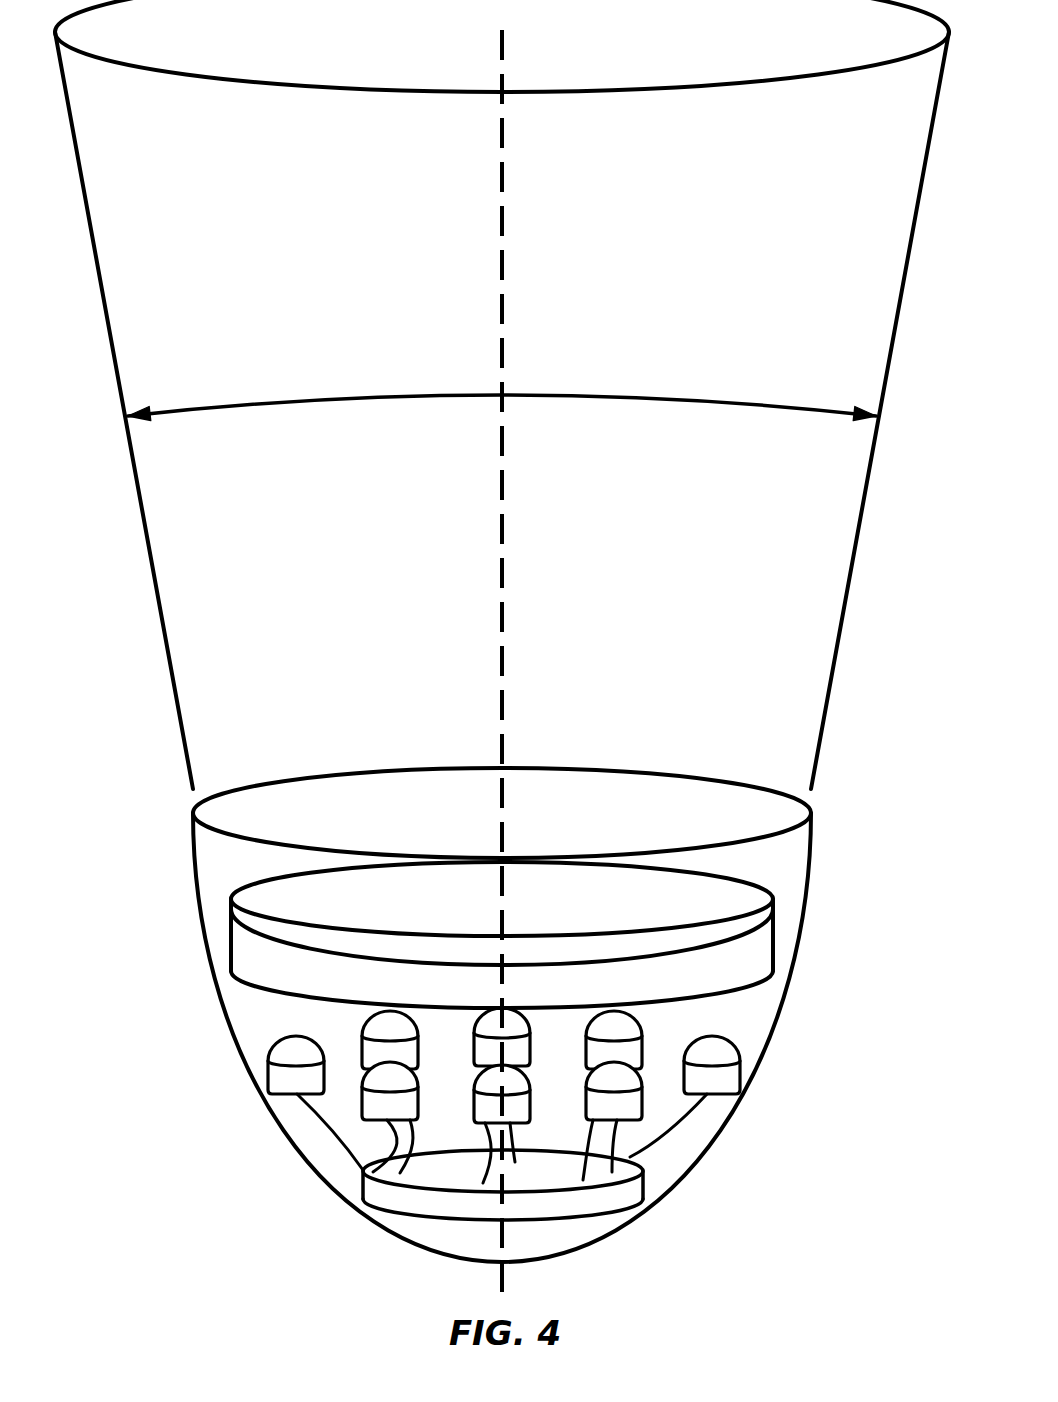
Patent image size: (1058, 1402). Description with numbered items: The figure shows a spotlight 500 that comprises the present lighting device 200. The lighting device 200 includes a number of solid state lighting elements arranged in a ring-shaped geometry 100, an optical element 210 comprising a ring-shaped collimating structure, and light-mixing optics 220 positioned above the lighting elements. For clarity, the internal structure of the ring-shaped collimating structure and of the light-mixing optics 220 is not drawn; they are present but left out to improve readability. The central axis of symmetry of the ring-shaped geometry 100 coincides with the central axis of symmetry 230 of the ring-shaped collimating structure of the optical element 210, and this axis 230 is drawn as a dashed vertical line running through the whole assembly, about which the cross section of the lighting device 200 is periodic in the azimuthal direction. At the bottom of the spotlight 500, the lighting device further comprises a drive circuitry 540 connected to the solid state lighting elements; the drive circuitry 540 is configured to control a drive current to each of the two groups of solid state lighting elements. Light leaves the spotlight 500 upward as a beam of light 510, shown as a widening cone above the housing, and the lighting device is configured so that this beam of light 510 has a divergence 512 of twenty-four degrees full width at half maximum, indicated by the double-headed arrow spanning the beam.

The ring-shaped geometry 100 is at (358, 1130).
The lighting device 200 is at (418, 1155).
The optical element 210 is at (278, 970).
The light-mixing optics 220 is at (742, 923).
The central axis of symmetry 230 is at (507, 652).
The spotlight 500 is at (722, 1168).
The beam of light 510 is at (727, 591).
The divergence 512 is at (625, 398).
The drive circuitry 540 is at (418, 1200).